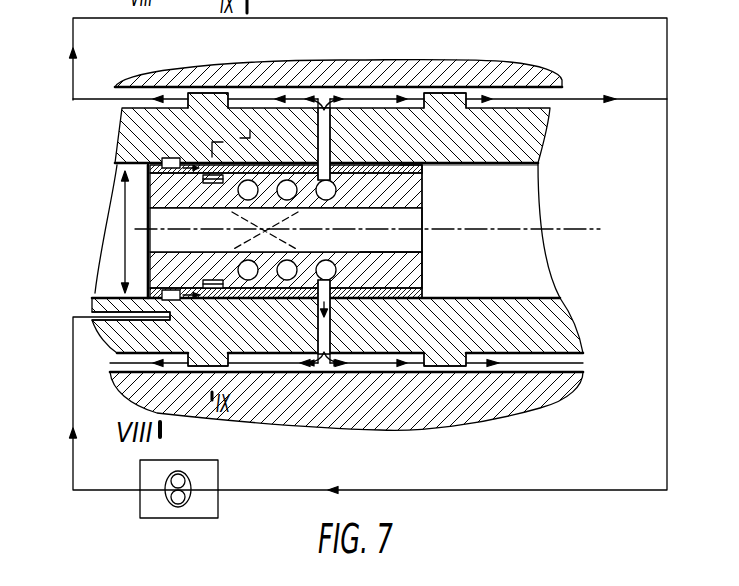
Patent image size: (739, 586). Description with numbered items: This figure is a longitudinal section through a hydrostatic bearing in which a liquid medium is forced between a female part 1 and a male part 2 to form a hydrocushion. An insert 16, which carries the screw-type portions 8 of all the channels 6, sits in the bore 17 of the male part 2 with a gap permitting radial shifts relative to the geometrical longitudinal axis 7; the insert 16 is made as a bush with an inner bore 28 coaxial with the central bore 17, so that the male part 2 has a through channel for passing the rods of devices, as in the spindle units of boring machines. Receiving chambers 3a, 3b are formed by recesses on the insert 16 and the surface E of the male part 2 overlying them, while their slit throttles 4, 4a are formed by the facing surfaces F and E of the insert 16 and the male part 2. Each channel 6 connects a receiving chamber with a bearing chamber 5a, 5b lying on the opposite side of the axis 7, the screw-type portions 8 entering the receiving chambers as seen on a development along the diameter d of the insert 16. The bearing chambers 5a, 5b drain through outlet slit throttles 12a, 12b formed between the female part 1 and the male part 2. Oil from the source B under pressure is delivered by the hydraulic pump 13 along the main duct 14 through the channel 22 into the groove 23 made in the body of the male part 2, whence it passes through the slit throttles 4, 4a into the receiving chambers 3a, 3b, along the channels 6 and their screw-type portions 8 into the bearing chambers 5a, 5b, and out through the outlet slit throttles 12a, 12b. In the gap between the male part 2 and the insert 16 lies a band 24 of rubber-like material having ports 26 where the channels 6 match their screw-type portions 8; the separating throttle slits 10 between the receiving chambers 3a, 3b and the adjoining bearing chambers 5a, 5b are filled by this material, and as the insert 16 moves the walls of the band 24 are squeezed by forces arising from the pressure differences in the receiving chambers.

The female part 1 is at (571, 390).
The male part 2 is at (565, 340).
The receiving chamber 3a is at (223, 165).
The receiving chamber 3b is at (204, 290).
The slit throttle 4 is at (183, 302).
The slit throttle 4a is at (212, 142).
The bearing chamber 5a is at (363, 95).
The bearing chamber 5b is at (260, 373).
The channel 6 is at (316, 148).
The geometrical longitudinal axis 7 is at (567, 224).
The screw-type portion 8 is at (240, 259).
The separating throttle slit 10 is at (273, 298).
The outlet slit throttle 12a is at (208, 93).
The outlet slit throttle 12b is at (202, 367).
The hydraulic pump 13 is at (166, 500).
The main duct 14 is at (90, 490).
The insert 16 is at (414, 278).
The bore 17 is at (518, 172).
The channel 22 is at (120, 326).
The groove 23 is at (163, 290).
The band 24 is at (410, 167).
The port 26 is at (332, 301).
The inner bore 28 is at (412, 245).
The source of liquid medium B is at (196, 508).
The diameter d is at (125, 228).
The surface E is at (452, 292).
The surface F is at (381, 278).